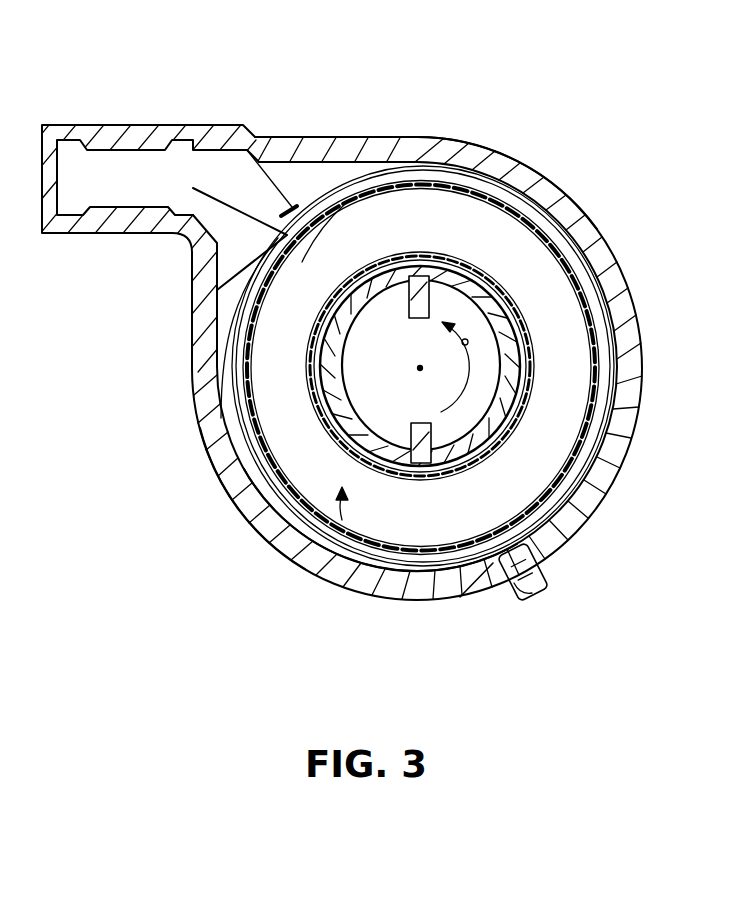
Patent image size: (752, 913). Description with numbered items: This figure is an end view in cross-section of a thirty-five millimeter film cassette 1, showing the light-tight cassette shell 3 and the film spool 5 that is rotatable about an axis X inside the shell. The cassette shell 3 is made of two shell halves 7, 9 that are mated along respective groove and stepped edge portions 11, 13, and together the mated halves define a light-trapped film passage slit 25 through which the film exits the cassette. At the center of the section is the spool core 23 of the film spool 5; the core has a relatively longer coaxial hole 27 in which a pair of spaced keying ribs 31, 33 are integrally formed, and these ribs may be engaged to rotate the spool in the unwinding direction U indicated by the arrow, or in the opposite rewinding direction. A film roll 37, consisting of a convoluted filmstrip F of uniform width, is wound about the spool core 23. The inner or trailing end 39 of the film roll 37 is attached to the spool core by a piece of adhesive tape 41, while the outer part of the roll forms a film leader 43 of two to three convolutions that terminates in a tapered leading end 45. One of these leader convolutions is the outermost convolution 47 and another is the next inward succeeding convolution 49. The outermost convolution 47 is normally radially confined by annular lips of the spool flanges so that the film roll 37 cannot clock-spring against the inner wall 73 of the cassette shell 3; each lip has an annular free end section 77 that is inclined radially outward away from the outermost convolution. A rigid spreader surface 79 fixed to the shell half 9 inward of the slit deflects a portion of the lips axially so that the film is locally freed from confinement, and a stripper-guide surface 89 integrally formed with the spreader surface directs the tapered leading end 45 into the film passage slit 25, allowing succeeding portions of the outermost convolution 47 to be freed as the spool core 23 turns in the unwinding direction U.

The film cassette 1 is at (190, 100).
The cassette shell 3 is at (612, 508).
The film spool 5 is at (614, 383).
The shell half 7 is at (381, 134).
The shell half 9 is at (428, 600).
The groove edge portion 11 is at (520, 585).
The stepped edge portion 13 is at (508, 560).
The spool core 23 is at (522, 365).
The film passage slit 25 is at (95, 190).
The longer coaxial hole 27 is at (490, 328).
The keying rib 31 is at (410, 313).
The keying rib 33 is at (412, 432).
The film roll 37 is at (252, 500).
The inner end 39 is at (322, 392).
The adhesive tape 41 is at (332, 374).
The film leader 43 is at (337, 190).
The tapered leading end 45 is at (290, 206).
The outermost convolution 47 is at (553, 253).
The next inward succeeding convolution 49 is at (563, 260).
The inner wall 73 is at (197, 412).
The annular free end section 77 is at (224, 343).
The spreader surface 79 is at (243, 237).
The stripper-guide surface 89 is at (230, 232).
The filmstrip F is at (318, 563).
The axis X is at (420, 367).
The unwinding direction U is at (463, 344).